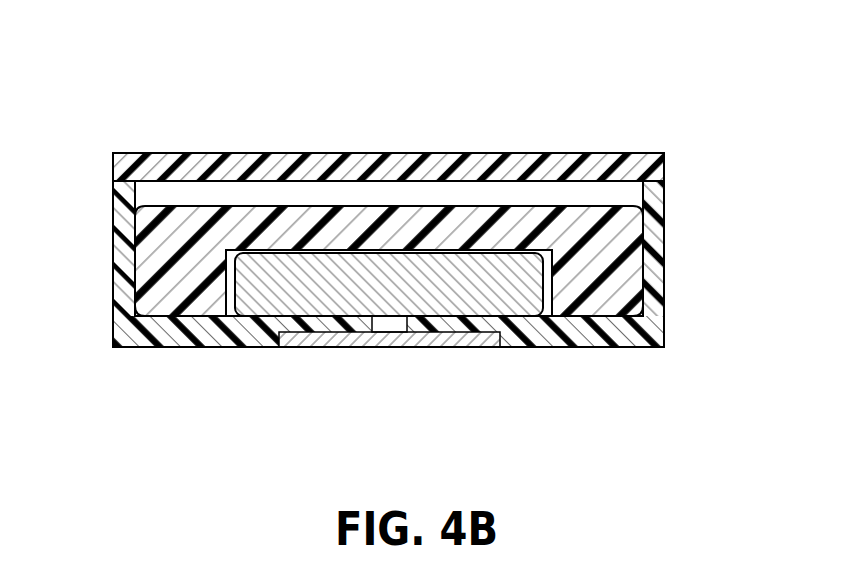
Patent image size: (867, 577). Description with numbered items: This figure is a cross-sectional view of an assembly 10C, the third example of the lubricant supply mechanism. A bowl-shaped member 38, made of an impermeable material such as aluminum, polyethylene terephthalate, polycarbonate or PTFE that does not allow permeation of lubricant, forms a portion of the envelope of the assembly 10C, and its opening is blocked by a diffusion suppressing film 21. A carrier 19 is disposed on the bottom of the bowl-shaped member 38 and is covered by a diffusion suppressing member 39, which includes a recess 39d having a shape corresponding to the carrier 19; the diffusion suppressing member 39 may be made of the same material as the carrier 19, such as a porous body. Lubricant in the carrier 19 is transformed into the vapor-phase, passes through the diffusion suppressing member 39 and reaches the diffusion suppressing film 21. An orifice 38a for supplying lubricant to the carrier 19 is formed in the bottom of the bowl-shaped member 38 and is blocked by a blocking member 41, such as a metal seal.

The assembly 10C is at (391, 228).
The carrier 19 is at (285, 270).
The diffusion suppressing film 21 is at (478, 165).
The bowl-shaped member 38 is at (655, 243).
The orifice 38a is at (388, 328).
The diffusion suppressing member 39 is at (143, 265).
The recess 39d is at (546, 318).
The blocking member 41 is at (471, 338).